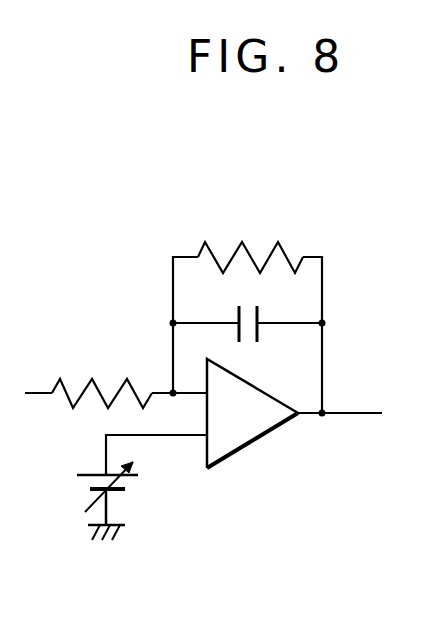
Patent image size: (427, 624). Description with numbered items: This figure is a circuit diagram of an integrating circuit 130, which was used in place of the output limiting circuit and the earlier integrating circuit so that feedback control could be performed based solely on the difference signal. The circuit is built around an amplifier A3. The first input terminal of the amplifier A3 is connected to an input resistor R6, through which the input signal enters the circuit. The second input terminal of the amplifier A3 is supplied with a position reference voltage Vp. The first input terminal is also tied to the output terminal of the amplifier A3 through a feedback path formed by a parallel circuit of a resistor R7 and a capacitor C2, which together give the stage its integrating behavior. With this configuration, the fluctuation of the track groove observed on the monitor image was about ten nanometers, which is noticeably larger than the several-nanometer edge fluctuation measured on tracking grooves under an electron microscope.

The integrating circuit 130 is at (218, 512).
The resistor R7 is at (260, 252).
The capacitor C2 is at (243, 304).
The input resistor R6 is at (118, 385).
The amplifier A3 is at (243, 430).
The position reference voltage Vp is at (85, 501).